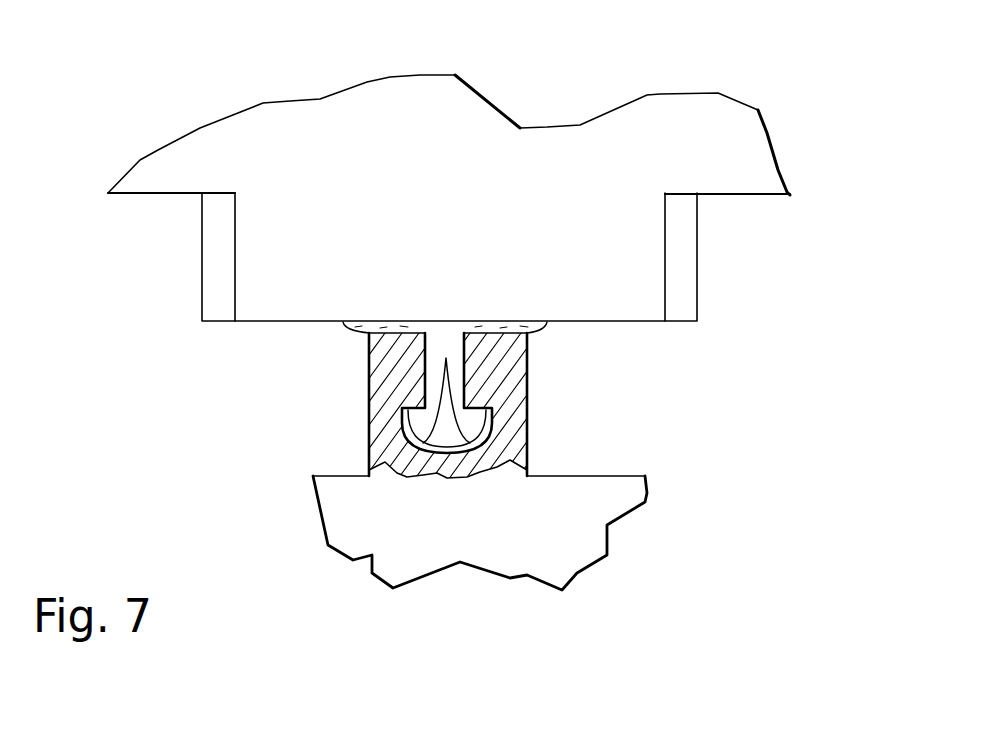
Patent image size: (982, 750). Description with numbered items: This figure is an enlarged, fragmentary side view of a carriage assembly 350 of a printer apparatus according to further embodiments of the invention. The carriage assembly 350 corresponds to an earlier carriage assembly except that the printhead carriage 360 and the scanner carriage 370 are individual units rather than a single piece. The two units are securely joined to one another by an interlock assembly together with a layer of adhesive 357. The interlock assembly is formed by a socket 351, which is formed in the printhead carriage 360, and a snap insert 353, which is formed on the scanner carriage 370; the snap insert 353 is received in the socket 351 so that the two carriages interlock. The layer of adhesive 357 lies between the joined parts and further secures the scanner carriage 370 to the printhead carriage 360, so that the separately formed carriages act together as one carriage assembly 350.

The carriage assembly 350 is at (505, 177).
The scanner carriage 370 is at (488, 183).
The layer of adhesive 357 is at (512, 326).
The socket 351 is at (425, 366).
The snap insert 353 is at (463, 425).
The printhead carriage 360 is at (600, 505).